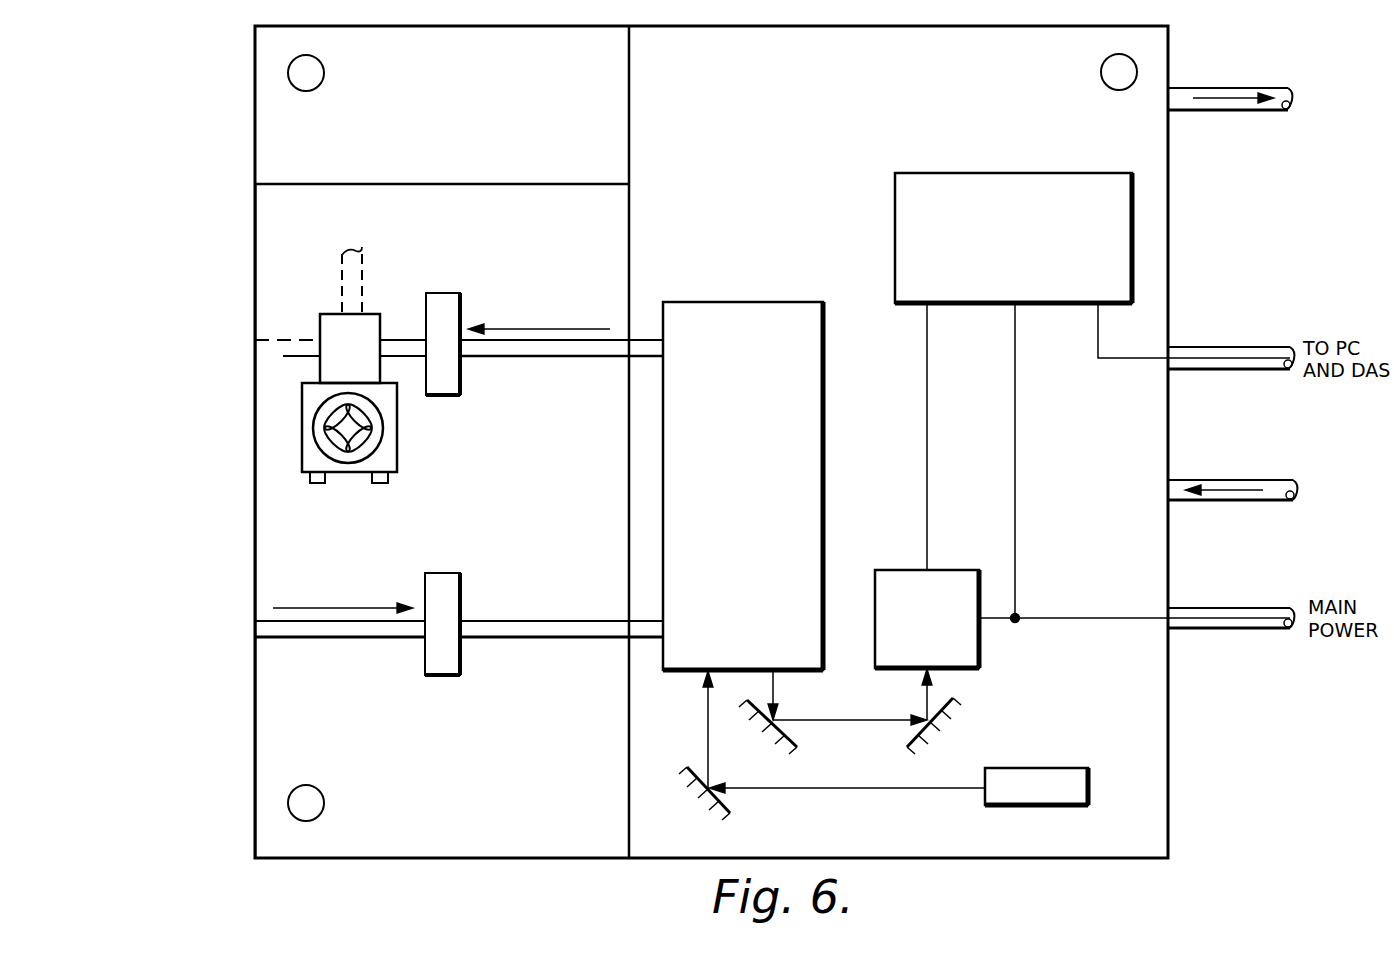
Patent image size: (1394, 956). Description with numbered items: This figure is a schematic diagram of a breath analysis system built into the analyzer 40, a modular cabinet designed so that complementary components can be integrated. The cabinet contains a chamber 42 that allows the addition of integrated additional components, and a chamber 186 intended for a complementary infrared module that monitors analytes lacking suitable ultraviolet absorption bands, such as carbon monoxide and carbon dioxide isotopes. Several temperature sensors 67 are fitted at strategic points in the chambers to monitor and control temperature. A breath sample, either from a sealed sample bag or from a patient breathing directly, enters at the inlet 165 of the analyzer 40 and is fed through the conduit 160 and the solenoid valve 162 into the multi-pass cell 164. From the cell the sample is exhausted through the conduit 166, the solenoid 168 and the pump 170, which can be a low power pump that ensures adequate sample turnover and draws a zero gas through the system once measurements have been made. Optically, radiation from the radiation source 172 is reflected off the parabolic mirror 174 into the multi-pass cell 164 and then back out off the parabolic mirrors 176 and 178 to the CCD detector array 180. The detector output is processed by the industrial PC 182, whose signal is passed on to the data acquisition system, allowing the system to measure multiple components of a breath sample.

The analyzer 40 is at (242, 136).
The chamber 42 is at (278, 152).
The temperature sensor 67 is at (325, 74).
The conduit 160 is at (576, 642).
The solenoid valve 162 is at (460, 590).
The multi-pass cell 164 is at (750, 302).
The inlet 165 is at (256, 770).
The conduit 166 is at (612, 358).
The solenoid 168 is at (460, 380).
The pump 170 is at (397, 446).
The radiation source 172 is at (1028, 806).
The parabolic mirror 174 is at (732, 812).
The parabolic mirror 176 is at (797, 747).
The parabolic mirror 178 is at (955, 700).
The CCD detector array 180 is at (979, 655).
The industrial PC 182 is at (1000, 173).
The chamber 186 is at (305, 511).